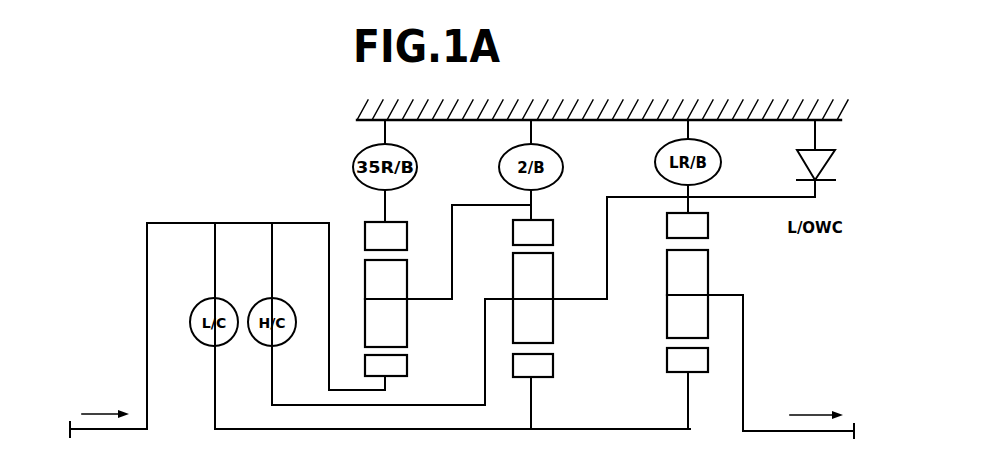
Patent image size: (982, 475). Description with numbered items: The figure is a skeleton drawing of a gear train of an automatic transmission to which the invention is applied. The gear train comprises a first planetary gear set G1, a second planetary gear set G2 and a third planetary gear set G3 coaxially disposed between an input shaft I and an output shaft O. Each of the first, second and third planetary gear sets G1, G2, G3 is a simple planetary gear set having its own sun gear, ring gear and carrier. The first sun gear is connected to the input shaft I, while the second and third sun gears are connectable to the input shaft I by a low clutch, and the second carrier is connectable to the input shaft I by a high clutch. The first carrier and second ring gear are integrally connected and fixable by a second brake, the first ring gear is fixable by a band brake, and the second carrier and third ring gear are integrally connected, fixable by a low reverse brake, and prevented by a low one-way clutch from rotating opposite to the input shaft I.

The first planetary gear set G1 is at (358, 256).
The second planetary gear set G2 is at (555, 332).
The third planetary gear set G3 is at (718, 283).
The input shaft I is at (92, 431).
The output shaft O is at (823, 432).